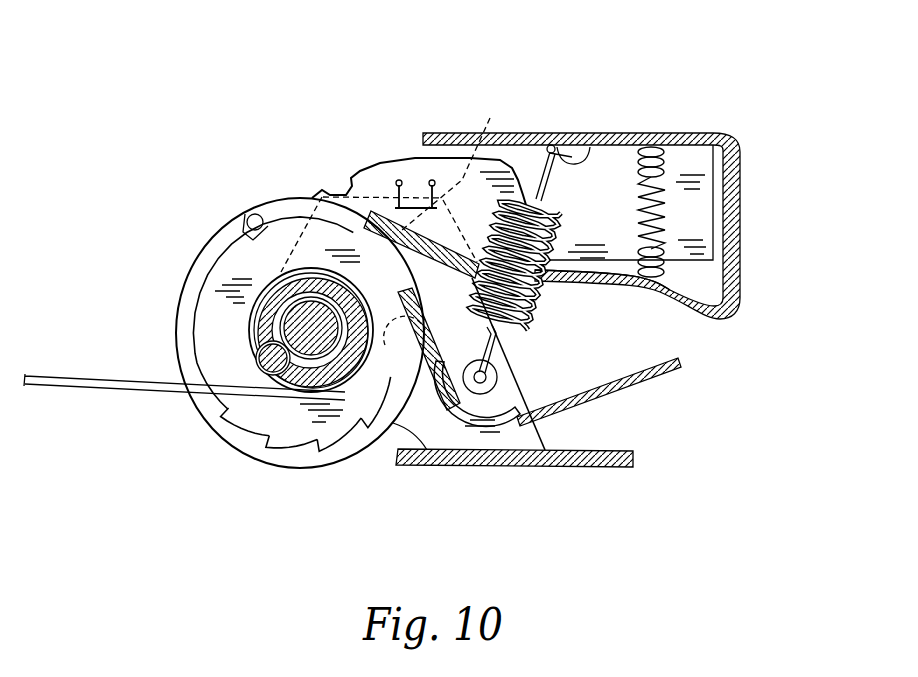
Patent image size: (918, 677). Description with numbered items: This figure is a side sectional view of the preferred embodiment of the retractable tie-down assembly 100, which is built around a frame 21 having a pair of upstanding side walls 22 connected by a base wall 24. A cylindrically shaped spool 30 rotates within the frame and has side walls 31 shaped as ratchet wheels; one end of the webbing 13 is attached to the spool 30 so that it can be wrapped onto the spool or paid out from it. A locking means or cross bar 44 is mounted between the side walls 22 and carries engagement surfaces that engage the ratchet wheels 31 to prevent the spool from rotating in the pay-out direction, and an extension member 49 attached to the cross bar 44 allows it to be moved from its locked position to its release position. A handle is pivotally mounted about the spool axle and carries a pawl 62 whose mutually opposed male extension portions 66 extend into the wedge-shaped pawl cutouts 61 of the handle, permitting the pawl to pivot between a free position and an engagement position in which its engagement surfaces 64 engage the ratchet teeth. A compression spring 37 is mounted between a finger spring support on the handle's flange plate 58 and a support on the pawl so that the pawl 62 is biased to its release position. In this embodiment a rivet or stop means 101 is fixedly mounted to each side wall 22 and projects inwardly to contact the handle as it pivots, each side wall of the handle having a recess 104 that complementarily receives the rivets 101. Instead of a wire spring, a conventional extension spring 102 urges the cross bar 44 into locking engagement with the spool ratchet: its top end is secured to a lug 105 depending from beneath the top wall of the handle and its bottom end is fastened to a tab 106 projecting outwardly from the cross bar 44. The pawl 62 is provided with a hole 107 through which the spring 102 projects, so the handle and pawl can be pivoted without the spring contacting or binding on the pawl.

The retractable tie-down assembly 100 is at (125, 210).
The rivet or stop means 101 is at (248, 217).
The webbing 13 is at (57, 388).
The spool 30 is at (297, 277).
The side walls (ratchet wheels) 31 is at (195, 305).
The engagement surfaces 64 is at (323, 195).
The recess 104 is at (352, 178).
The pawl cutout 61 is at (367, 222).
The male extension portions 66 is at (423, 220).
The lug 105 is at (587, 147).
The hole 107 is at (558, 256).
The flange plate 58 is at (672, 137).
The compression spring 37 is at (665, 172).
The extension spring 102 is at (540, 293).
The pawl 62 is at (733, 308).
The frame 21 is at (510, 360).
The tab 106 is at (500, 383).
The extension member 49 is at (647, 382).
The cross bar 44 is at (452, 405).
The upstanding side walls 22 is at (428, 425).
The base wall 24 is at (590, 470).